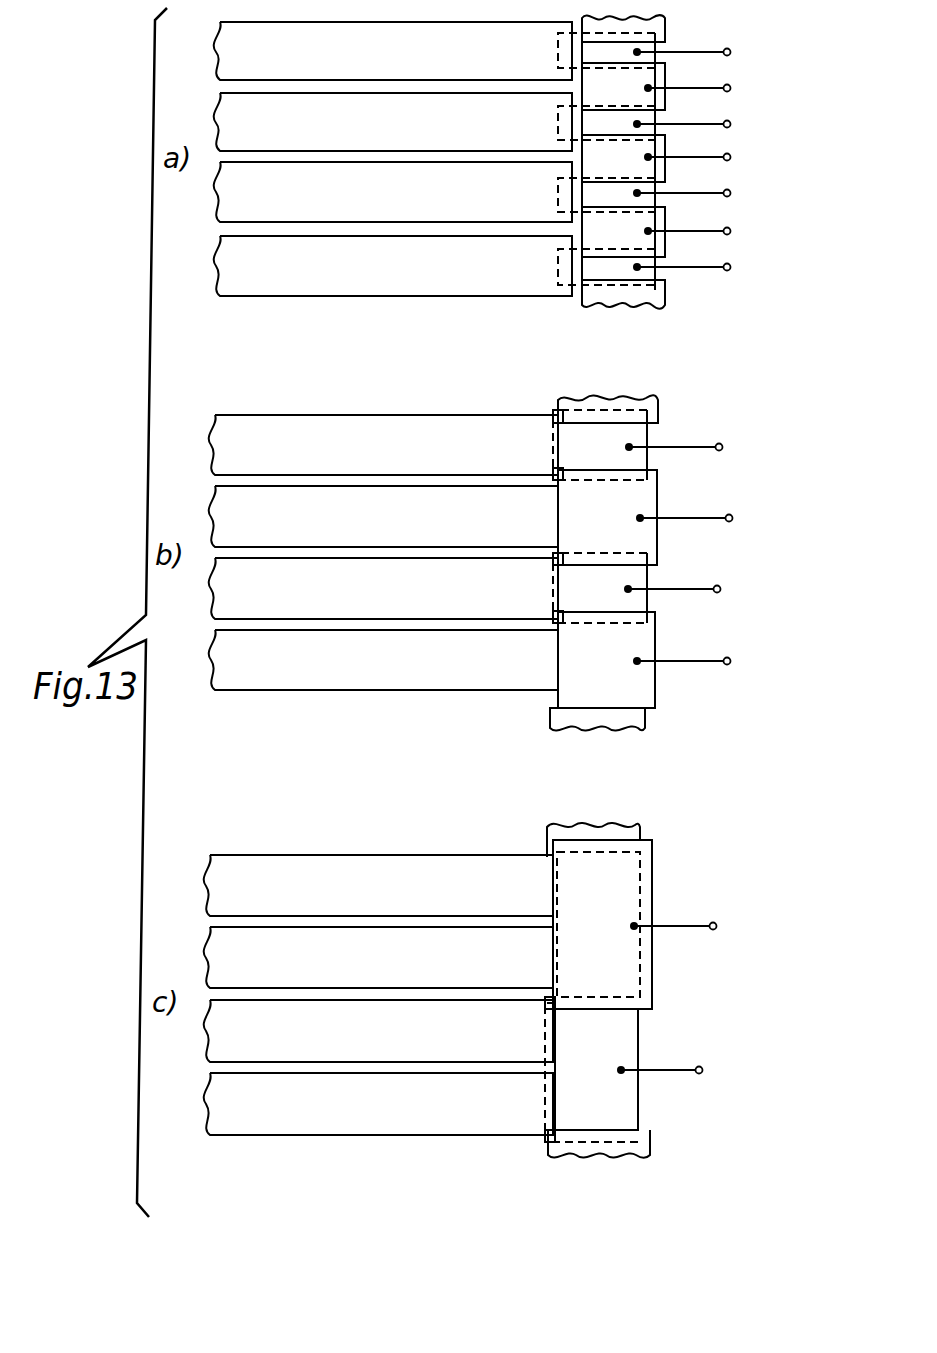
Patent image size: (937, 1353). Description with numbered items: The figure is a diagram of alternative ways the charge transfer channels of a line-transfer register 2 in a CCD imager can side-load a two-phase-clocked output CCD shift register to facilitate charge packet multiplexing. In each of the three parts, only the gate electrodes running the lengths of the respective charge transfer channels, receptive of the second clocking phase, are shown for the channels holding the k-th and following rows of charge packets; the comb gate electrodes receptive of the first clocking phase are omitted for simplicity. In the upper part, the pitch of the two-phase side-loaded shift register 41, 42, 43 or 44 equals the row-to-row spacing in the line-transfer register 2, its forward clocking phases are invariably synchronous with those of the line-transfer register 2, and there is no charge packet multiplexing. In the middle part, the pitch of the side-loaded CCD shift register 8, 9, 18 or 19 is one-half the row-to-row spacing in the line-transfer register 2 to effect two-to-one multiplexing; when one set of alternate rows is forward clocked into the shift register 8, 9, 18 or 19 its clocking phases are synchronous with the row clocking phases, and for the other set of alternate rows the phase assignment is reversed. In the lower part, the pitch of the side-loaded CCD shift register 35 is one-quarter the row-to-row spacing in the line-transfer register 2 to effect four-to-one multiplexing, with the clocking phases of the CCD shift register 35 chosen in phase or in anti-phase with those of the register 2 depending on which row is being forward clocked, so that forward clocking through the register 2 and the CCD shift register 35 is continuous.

The line-transfer register 2 is at (567, 313).
The two-phase side-loaded shift register 41 is at (668, 190).
The two-phase side-loaded shift register 42 is at (668, 190).
The two-phase side-loaded shift register 43 is at (668, 190).
The two-phase side-loaded shift register 44 is at (662, 326).
The side-loaded CCD shift register 8 is at (665, 594).
The side-loaded CCD shift register 9 is at (665, 594).
The side-loaded CCD shift register 18 is at (665, 594).
The side-loaded CCD shift register 19 is at (655, 748).
The side-loaded CCD shift register 35 is at (650, 1176).